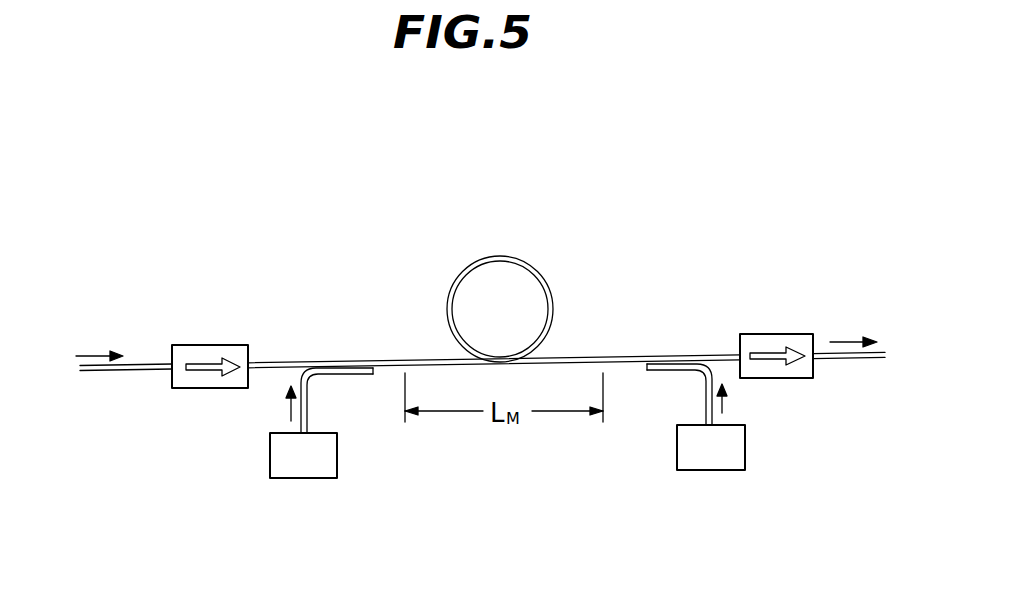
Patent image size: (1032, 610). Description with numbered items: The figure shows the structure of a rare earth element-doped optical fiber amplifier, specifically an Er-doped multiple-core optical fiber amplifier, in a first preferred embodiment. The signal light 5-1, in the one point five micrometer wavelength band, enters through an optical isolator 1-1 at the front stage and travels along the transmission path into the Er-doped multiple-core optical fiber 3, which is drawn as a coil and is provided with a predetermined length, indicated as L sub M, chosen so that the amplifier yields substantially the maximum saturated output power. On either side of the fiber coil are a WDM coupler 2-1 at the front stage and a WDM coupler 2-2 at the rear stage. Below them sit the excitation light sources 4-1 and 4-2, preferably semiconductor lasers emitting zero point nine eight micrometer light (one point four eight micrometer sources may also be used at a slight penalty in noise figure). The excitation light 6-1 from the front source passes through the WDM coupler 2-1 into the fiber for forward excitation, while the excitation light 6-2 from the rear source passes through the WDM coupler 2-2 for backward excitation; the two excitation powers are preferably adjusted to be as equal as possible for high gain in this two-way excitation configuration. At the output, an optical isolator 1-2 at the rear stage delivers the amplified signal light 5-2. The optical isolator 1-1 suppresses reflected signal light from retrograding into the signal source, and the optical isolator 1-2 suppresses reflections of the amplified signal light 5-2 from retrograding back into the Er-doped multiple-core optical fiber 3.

The optical isolator 1-1 is at (195, 345).
The optical isolator 1-2 is at (762, 334).
The WDM coupler 2-1 is at (313, 357).
The WDM coupler 2-2 is at (660, 357).
The Er-doped multiple-core optical fiber 3 is at (455, 268).
The excitation light source 4-1 is at (293, 472).
The excitation light source 4-2 is at (703, 458).
The signal light 5-1 is at (80, 356).
The amplified signal light 5-2 is at (845, 341).
The excitation light 6-1 is at (288, 405).
The excitation light 6-2 is at (723, 398).